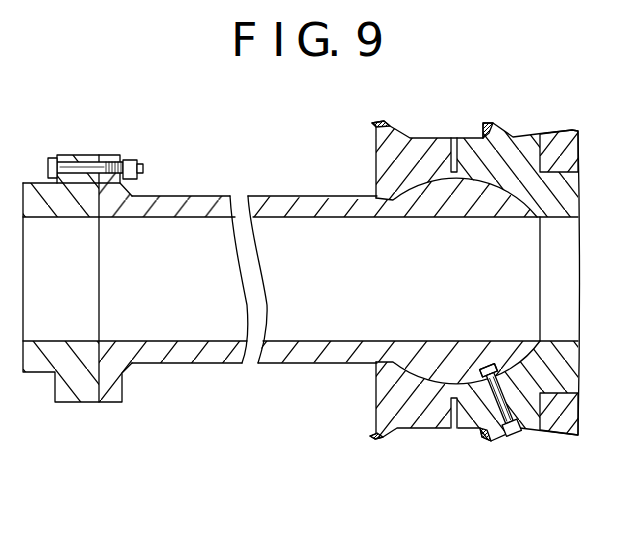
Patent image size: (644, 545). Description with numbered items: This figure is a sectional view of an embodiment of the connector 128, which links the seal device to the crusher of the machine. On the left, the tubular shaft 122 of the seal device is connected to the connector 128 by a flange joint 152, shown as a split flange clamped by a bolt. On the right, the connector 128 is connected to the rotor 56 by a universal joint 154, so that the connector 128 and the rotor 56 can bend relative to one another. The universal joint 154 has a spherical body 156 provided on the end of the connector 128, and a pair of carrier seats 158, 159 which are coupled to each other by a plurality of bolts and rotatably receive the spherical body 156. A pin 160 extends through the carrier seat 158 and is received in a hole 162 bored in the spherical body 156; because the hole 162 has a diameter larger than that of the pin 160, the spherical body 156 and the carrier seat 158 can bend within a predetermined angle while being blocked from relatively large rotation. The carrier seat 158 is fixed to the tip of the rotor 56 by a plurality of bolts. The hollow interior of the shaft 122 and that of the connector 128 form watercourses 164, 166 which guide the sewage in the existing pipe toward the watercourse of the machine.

The rotor 56 is at (576, 131).
The shaft 122 is at (42, 183).
The connector 128 is at (310, 353).
The flange joint 152 is at (116, 161).
The universal joint 154 is at (386, 121).
The spherical body 156 is at (448, 191).
The carrier seat 158 is at (515, 138).
The carrier seat 159 is at (400, 426).
The pin 160 is at (492, 365).
The hole 162 is at (502, 372).
The watercourse 164 is at (82, 287).
The watercourse 166 is at (383, 292).